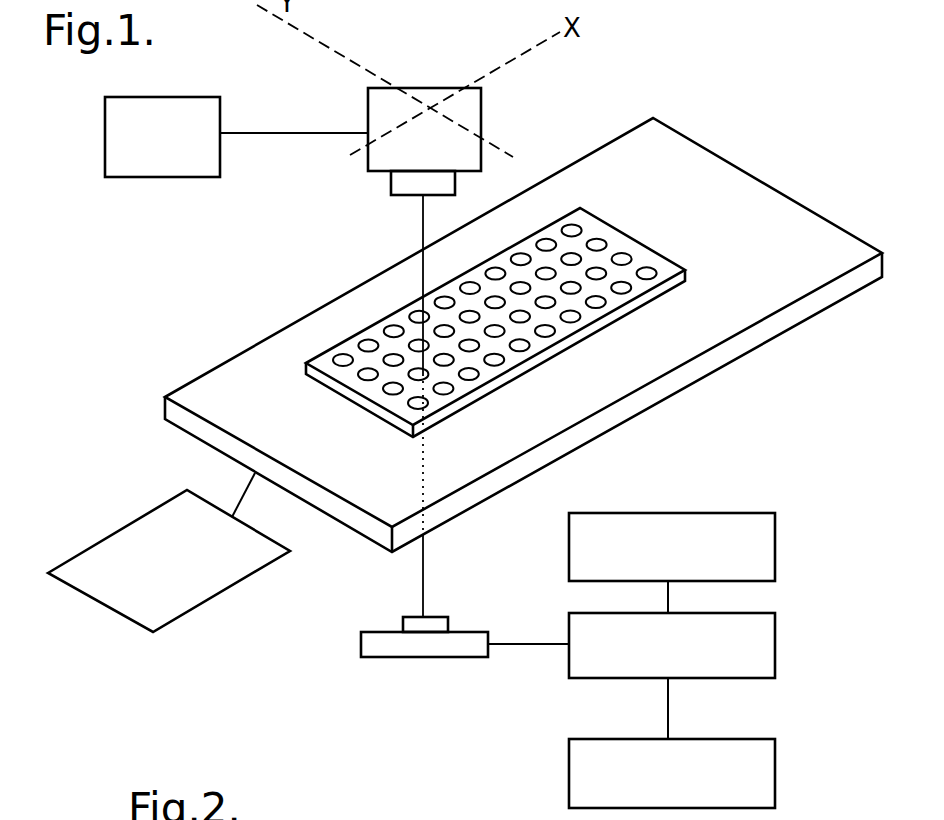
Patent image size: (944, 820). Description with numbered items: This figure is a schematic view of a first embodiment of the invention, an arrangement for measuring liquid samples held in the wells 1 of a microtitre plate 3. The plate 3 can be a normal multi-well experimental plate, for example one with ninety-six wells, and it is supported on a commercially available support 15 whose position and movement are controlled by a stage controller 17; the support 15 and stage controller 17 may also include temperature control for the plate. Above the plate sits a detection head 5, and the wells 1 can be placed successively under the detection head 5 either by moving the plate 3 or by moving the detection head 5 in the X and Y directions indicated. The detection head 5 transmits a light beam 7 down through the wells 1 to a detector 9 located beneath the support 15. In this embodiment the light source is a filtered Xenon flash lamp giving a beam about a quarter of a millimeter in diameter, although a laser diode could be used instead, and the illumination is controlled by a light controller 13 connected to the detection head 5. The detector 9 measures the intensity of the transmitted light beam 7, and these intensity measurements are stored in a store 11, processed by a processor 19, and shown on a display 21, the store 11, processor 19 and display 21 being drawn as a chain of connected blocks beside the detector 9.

The well 1 is at (650, 273).
The microtitre plate 3 is at (577, 340).
The detection head 5 is at (481, 104).
The light beam 7 is at (423, 214).
The detector 9 is at (361, 640).
The store 11 is at (775, 540).
The light controller 13 is at (105, 134).
The support 15 is at (720, 367).
The stage controller 17 is at (86, 551).
The processor 19 is at (775, 637).
The display 21 is at (775, 767).